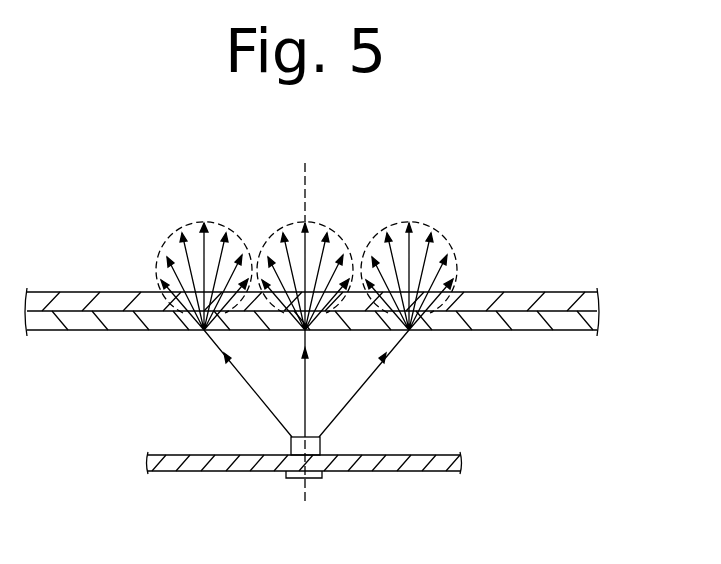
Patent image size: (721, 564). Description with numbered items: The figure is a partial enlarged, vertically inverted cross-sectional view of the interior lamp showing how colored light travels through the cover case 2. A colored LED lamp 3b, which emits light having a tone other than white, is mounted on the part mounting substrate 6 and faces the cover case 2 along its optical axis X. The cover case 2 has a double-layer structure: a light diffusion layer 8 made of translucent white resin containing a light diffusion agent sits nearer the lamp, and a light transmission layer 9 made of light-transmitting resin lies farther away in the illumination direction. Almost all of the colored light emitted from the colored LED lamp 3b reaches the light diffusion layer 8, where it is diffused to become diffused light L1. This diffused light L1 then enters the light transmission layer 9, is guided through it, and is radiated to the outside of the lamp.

The cover case 2 is at (625, 285).
The light transmission layer 9 is at (548, 296).
The light diffusion layer 8 is at (549, 318).
The colored LED lamp 3b is at (322, 445).
The part mounting substrate 6 is at (420, 463).
The diffused light L1 is at (399, 223).
The optical axis X is at (304, 321).